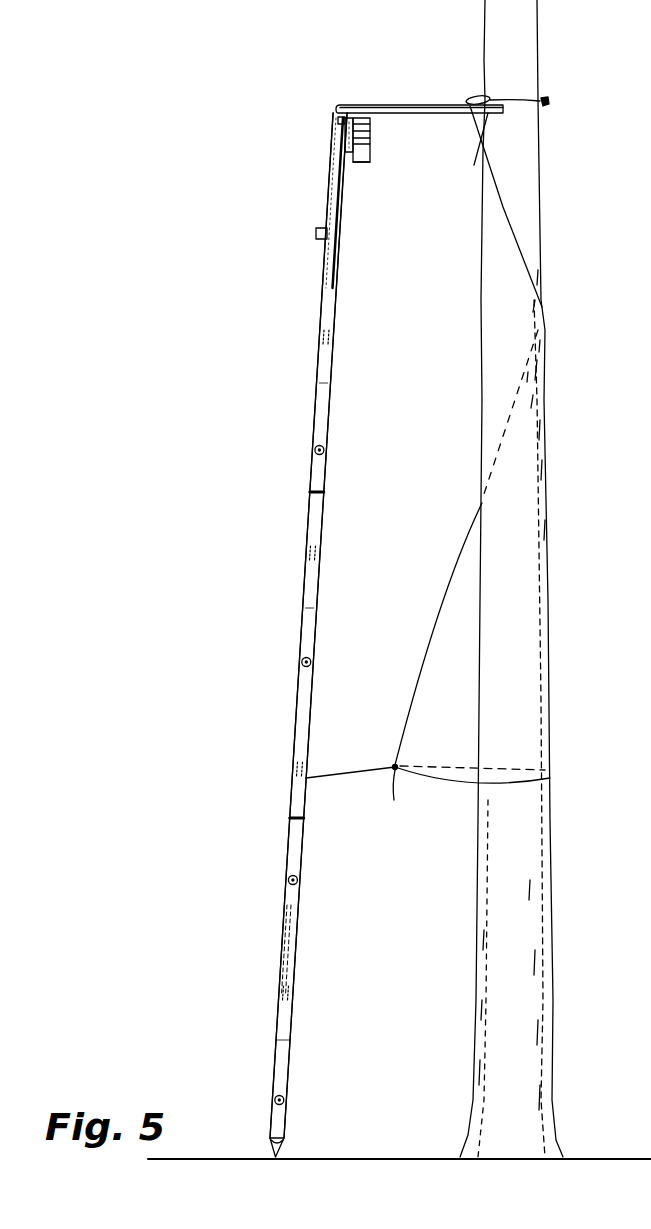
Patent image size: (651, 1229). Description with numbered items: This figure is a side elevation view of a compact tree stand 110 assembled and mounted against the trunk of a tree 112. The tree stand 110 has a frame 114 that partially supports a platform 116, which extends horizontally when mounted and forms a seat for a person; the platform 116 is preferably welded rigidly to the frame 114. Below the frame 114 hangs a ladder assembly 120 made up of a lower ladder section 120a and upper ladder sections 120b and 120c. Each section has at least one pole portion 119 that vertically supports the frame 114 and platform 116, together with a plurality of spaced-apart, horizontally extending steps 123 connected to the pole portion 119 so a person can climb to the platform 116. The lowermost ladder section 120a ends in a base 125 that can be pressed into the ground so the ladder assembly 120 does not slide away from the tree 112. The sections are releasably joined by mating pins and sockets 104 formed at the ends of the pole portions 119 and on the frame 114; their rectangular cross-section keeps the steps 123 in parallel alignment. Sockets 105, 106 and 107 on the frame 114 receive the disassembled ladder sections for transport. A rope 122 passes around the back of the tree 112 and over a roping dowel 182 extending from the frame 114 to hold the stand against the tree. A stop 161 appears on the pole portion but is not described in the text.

The tree stand 110 is at (304, 136).
The tree 112 is at (545, 1080).
The frame 114 is at (333, 118).
The platform 116 is at (406, 96).
The socket 104 is at (344, 137).
The socket 105 is at (362, 160).
The socket 106 is at (372, 138).
The socket 107 is at (372, 120).
The roping dowel 182 is at (474, 165).
The rope 122 is at (503, 208).
The stop 161 is at (316, 234).
The ladder assembly 120 is at (312, 492).
The lower ladder section 120a is at (284, 935).
The upper ladder section 120b is at (297, 723).
The upper ladder section 120c is at (330, 287).
The pole portion 119 is at (321, 384).
The step 123 is at (323, 338).
The base 125 is at (283, 1145).